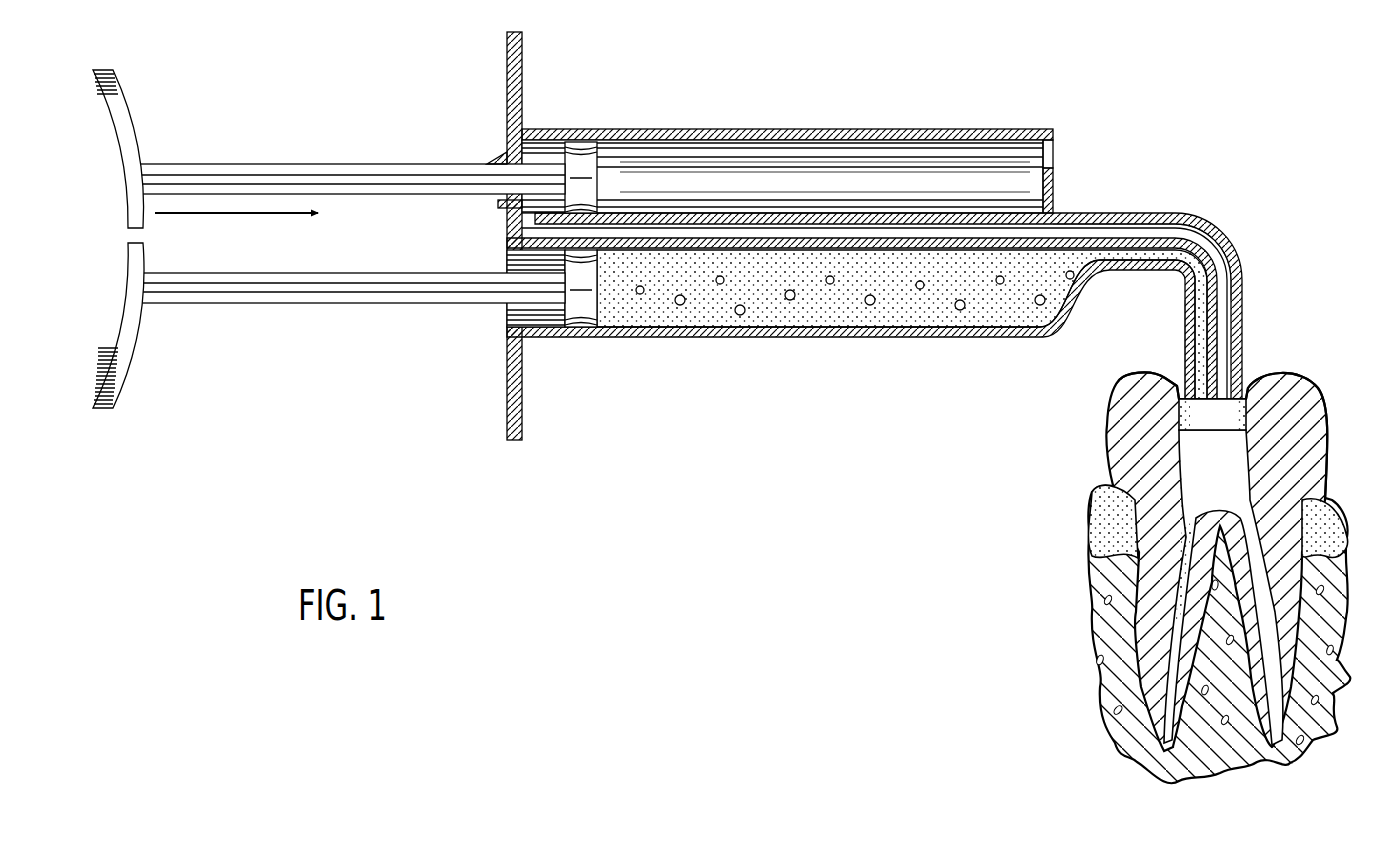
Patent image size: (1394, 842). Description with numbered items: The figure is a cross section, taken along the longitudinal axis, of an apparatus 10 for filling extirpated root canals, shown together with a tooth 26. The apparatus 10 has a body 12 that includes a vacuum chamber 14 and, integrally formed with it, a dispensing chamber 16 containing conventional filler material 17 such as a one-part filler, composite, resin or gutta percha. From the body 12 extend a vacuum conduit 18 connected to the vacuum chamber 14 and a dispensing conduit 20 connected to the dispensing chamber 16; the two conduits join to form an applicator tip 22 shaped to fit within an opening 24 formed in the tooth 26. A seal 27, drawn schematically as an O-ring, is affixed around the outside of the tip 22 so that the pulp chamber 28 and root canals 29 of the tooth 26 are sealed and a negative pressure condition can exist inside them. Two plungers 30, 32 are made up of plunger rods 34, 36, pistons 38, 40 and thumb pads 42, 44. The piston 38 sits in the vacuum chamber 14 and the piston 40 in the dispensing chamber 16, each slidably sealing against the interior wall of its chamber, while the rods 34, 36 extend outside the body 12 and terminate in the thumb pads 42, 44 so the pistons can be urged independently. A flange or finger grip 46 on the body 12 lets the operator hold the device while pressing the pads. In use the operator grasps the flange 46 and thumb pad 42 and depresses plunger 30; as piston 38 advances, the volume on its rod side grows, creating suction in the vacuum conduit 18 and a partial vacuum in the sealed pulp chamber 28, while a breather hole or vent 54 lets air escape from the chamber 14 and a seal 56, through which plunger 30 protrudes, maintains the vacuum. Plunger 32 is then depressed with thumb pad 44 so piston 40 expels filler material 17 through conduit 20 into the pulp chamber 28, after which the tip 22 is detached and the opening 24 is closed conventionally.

The apparatus 10 is at (1076, 88).
The body 12 is at (834, 127).
The vacuum chamber 14 is at (873, 168).
The dispensing chamber 16 is at (822, 320).
The filler material 17 is at (882, 320).
The vacuum conduit 18 is at (1222, 266).
The dispensing conduit 20 is at (1200, 360).
The applicator tip 22 is at (1248, 312).
The opening 24 is at (1232, 444).
The tooth 26 is at (1244, 547).
The seal 27 is at (1262, 378).
The pulp chamber 28 is at (1200, 472).
The root canals 29 is at (1180, 773).
The plunger 30 is at (329, 149).
The plunger 32 is at (329, 325).
The plunger rod 34 is at (256, 164).
The plunger rod 36 is at (283, 304).
The piston 38 is at (585, 162).
The piston 40 is at (590, 300).
The thumb pad 42 is at (132, 116).
The thumb pad 44 is at (122, 386).
The finger grip 46 is at (522, 42).
The vent 54 is at (1053, 160).
The seal 56 is at (500, 158).